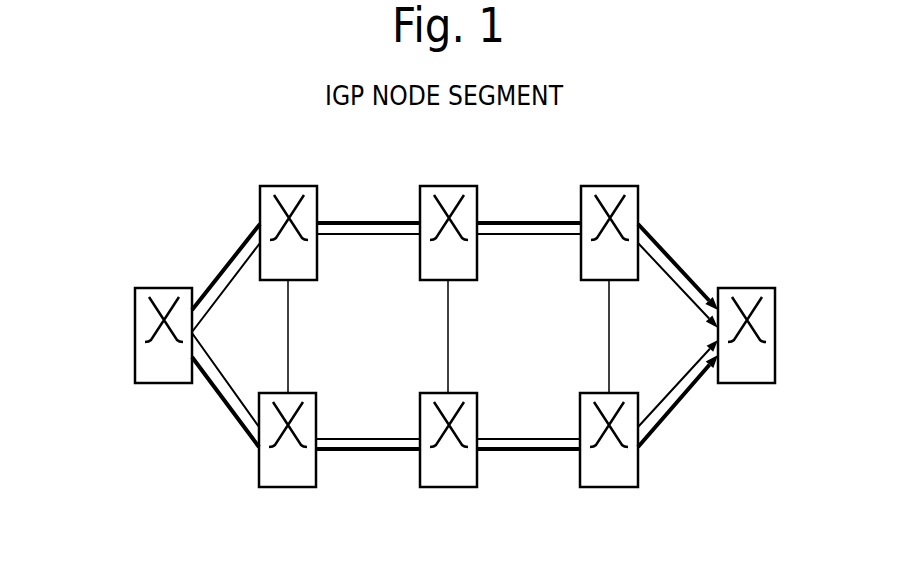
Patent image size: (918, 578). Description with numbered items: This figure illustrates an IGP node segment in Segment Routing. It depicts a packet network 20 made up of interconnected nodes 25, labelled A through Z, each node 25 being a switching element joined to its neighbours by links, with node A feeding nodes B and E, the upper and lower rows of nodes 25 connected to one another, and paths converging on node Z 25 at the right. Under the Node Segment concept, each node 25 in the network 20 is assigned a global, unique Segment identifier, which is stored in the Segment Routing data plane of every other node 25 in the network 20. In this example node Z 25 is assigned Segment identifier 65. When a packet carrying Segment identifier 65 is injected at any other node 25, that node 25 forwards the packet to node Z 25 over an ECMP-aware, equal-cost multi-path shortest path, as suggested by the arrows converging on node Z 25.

The packet network 20 is at (700, 232).
The node 25 is at (449, 338).
The Segment identifier 65 is at (765, 335).